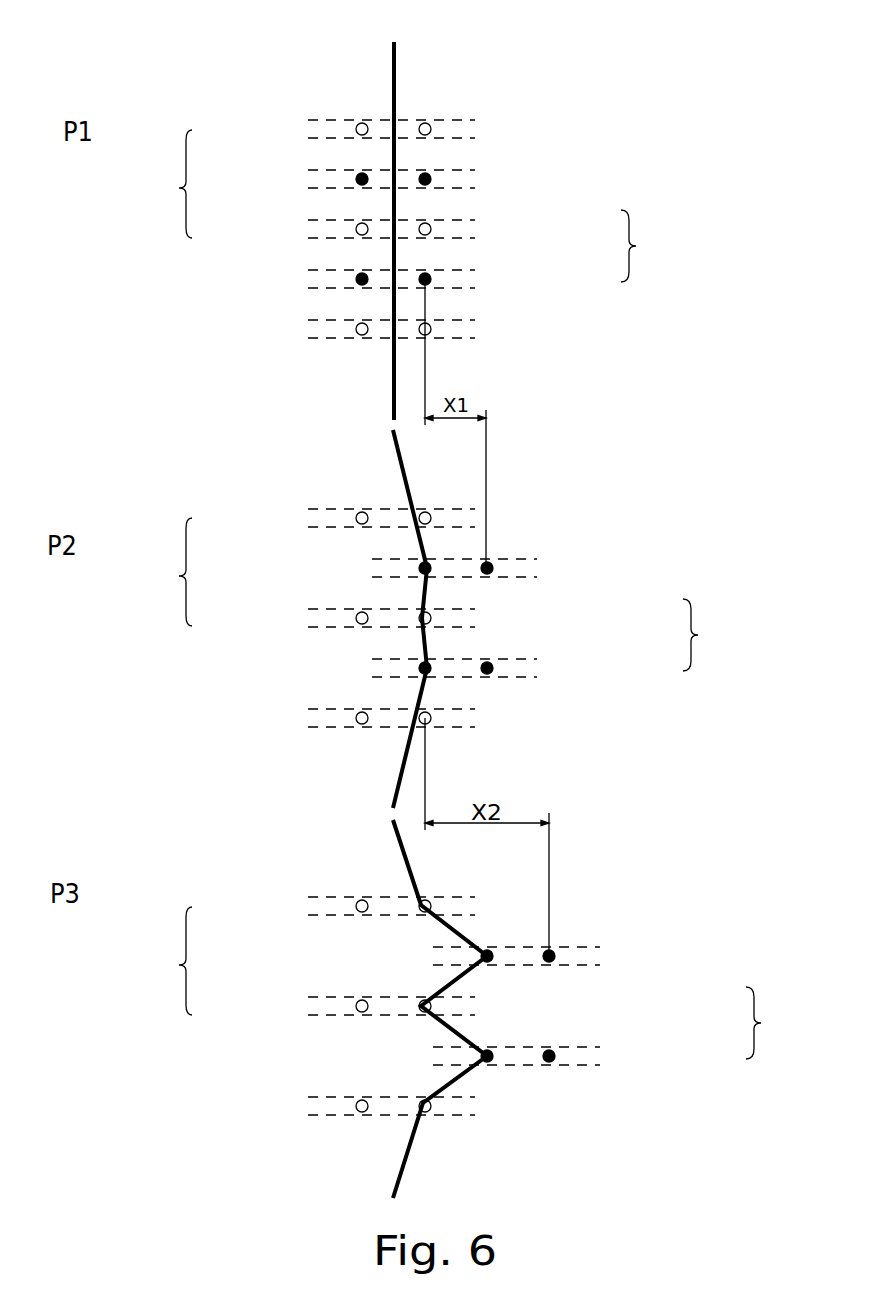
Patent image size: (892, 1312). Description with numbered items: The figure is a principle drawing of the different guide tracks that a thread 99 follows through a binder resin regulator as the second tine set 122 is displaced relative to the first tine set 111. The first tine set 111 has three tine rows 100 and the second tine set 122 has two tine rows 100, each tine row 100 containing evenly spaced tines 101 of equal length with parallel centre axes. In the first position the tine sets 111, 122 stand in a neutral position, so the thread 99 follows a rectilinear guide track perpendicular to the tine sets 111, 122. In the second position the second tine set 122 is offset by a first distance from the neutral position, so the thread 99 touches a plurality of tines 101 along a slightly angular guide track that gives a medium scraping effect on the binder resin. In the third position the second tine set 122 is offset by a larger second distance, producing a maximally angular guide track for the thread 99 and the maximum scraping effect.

The thread 99 is at (392, 78).
The tine row 100 is at (308, 1097).
The tine 101 is at (430, 175).
The first tine set 111 is at (155, 572).
The second tine set 122 is at (721, 634).